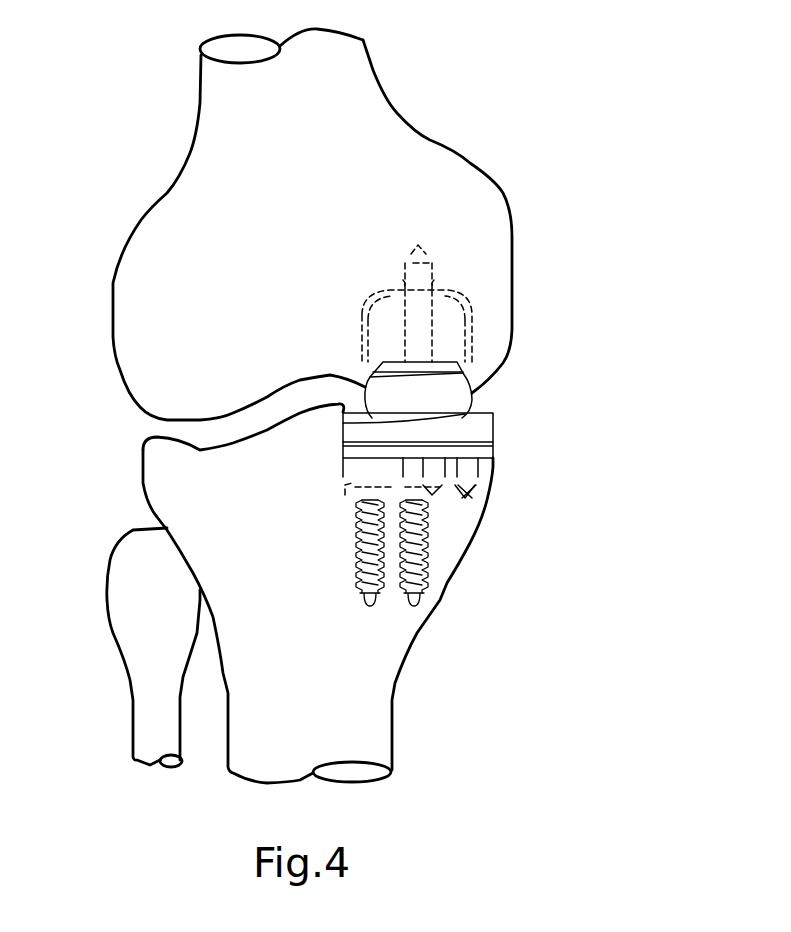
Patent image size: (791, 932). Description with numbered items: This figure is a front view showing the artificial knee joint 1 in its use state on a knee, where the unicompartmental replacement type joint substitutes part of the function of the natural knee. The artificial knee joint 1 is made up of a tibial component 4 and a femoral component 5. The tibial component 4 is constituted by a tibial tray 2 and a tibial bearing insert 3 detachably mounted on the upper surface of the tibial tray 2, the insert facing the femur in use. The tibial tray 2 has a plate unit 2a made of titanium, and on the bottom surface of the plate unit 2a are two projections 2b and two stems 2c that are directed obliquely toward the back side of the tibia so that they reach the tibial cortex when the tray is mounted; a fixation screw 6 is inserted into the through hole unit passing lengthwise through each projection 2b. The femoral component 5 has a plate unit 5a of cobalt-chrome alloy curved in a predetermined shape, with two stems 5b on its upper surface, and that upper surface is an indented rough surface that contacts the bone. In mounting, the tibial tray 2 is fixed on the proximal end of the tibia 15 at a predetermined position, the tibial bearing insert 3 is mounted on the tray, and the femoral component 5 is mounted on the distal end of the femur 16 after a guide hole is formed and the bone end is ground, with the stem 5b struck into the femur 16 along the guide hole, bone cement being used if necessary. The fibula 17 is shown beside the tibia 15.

The artificial knee joint 1 is at (466, 392).
The tibial tray 2 is at (405, 509).
The plate unit 2a is at (367, 452).
The projections 2b is at (340, 488).
The stems 2c is at (470, 480).
The tibial bearing insert 3 is at (507, 407).
The tibial component 4 is at (427, 510).
The femoral component 5 is at (416, 297).
The plate unit 5a is at (393, 397).
The stems 5b is at (437, 273).
The fixation screw 6 is at (437, 540).
The tibia 15 is at (362, 678).
The femur 16 is at (207, 130).
The fibula 17 is at (150, 708).